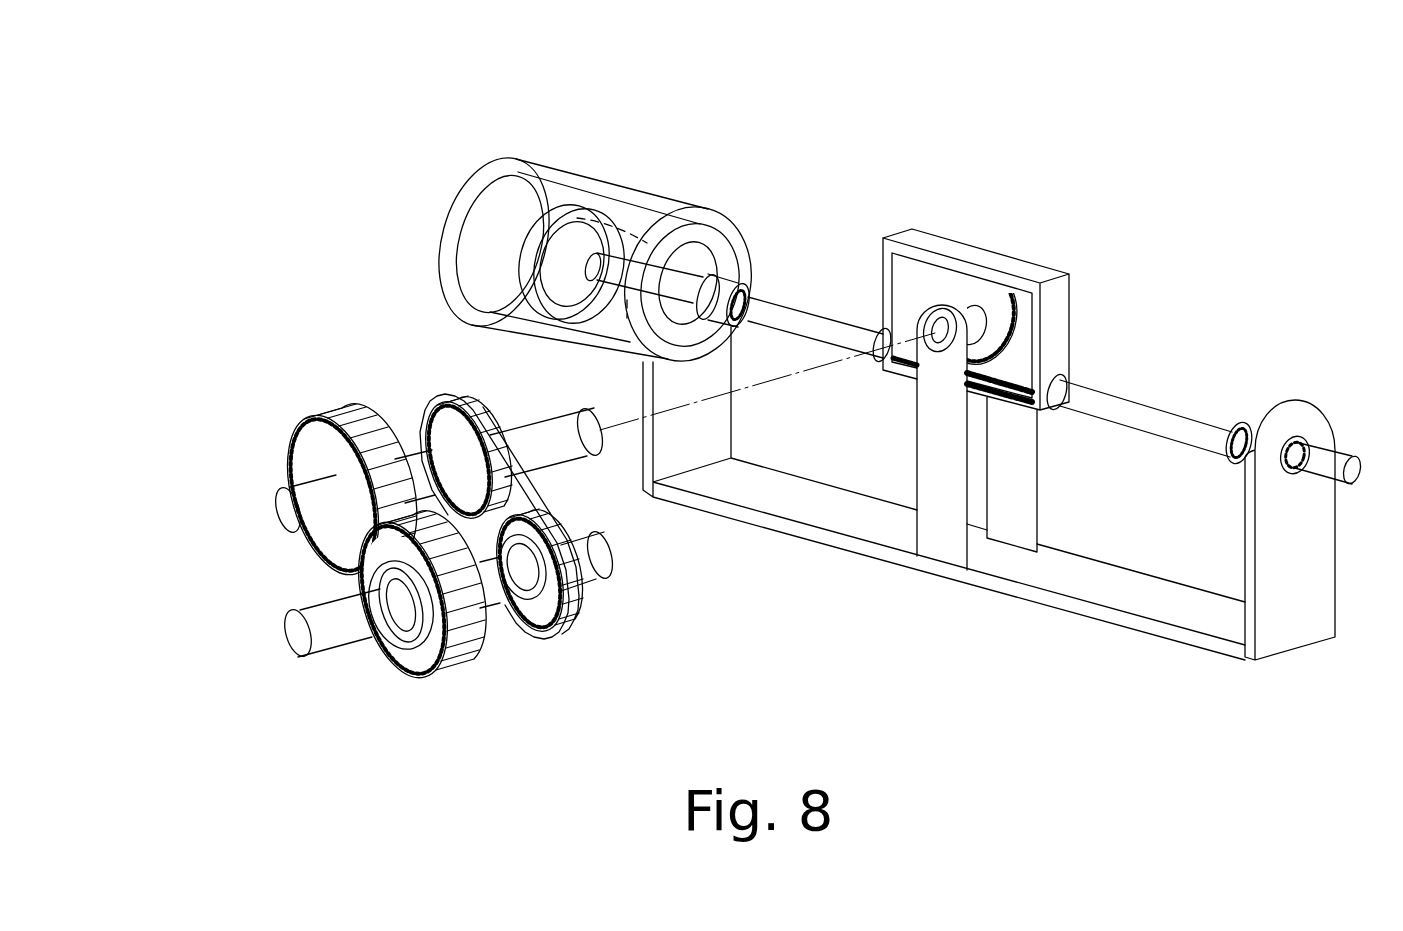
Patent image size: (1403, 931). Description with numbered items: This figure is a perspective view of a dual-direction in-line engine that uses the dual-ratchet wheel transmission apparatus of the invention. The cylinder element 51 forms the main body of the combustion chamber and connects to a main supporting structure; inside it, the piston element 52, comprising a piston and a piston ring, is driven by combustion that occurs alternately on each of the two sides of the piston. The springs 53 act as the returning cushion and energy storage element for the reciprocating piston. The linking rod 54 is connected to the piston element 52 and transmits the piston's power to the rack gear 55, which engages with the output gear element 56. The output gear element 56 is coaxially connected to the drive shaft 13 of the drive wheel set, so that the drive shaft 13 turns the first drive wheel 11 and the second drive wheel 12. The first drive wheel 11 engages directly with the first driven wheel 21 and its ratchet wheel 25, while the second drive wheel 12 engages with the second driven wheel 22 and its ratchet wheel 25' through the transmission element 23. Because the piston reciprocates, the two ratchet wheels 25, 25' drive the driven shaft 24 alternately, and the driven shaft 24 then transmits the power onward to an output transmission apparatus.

The first drive wheel 11 is at (323, 453).
The second drive wheel 12 is at (443, 425).
The drive shaft 13 is at (290, 510).
The first driven wheel 21 is at (467, 660).
The second driven wheel 22 is at (590, 598).
The transmission element 23 is at (473, 405).
The driven shaft 24 is at (347, 632).
The ratchet wheel 25 is at (401, 668).
The ratchet wheel 25' is at (551, 633).
The cylinder element 51 is at (532, 160).
The piston element 52 is at (578, 208).
The springs 53 is at (745, 282).
The linking rod 54 is at (815, 305).
The rack gear 55 is at (1027, 370).
The output gear element 56 is at (973, 290).